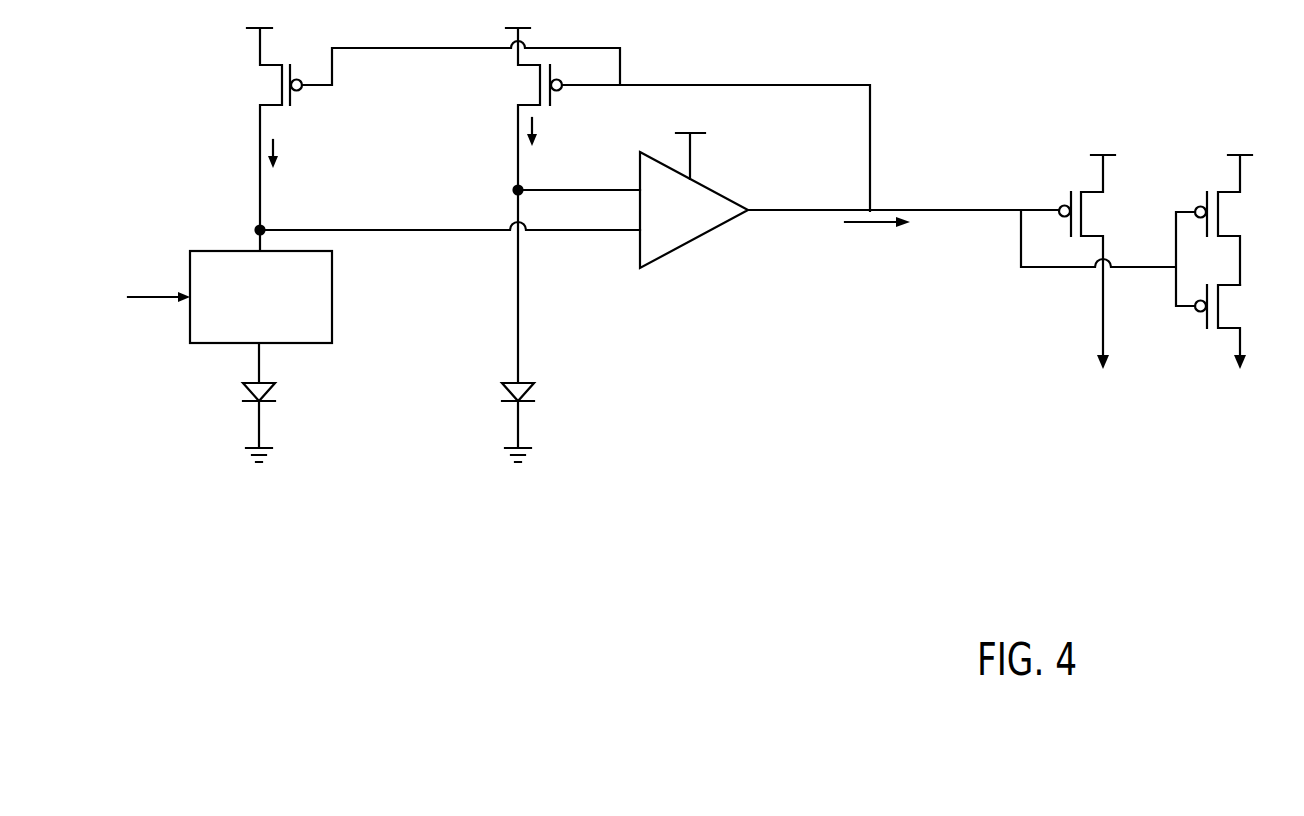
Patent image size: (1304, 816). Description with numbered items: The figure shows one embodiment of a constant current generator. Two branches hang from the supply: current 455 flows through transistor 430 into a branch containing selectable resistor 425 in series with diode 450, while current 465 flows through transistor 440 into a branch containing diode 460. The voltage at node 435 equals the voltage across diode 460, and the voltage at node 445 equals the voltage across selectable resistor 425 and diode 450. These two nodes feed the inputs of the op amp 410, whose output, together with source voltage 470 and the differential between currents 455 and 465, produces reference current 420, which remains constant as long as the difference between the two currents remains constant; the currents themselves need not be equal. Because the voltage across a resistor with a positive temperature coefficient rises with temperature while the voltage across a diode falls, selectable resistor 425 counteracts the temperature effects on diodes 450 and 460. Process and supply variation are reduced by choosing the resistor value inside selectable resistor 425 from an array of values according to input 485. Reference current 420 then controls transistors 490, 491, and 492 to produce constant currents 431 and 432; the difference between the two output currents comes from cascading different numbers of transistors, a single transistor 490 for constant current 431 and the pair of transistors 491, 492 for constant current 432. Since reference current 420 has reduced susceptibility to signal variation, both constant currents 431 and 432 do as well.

The op amp 410 is at (695, 239).
The reference current 420 is at (883, 259).
The selectable resistor 425 is at (270, 329).
The transistor 430 is at (433, 139).
The constant current 431 is at (1096, 406).
The constant current 432 is at (1244, 406).
The node 435 is at (522, 186).
The transistor 440 is at (688, 205).
The node 445 is at (264, 226).
The diode 450 is at (289, 402).
The current 455 is at (300, 154).
The diode 460 is at (548, 422).
The current 465 is at (558, 133).
The source voltage 470 is at (711, 138).
The input 485 is at (150, 320).
The transistor 490 is at (1098, 256).
The transistor 491 is at (1236, 220).
The transistor 492 is at (1240, 321).